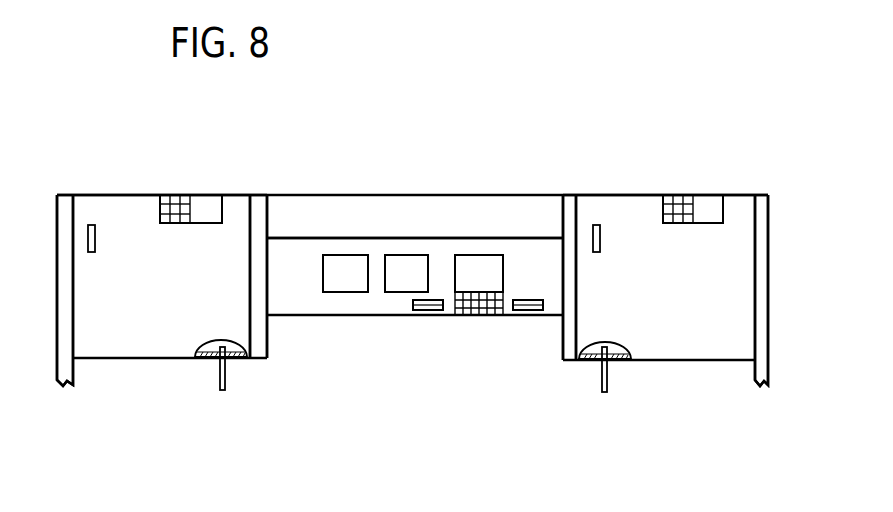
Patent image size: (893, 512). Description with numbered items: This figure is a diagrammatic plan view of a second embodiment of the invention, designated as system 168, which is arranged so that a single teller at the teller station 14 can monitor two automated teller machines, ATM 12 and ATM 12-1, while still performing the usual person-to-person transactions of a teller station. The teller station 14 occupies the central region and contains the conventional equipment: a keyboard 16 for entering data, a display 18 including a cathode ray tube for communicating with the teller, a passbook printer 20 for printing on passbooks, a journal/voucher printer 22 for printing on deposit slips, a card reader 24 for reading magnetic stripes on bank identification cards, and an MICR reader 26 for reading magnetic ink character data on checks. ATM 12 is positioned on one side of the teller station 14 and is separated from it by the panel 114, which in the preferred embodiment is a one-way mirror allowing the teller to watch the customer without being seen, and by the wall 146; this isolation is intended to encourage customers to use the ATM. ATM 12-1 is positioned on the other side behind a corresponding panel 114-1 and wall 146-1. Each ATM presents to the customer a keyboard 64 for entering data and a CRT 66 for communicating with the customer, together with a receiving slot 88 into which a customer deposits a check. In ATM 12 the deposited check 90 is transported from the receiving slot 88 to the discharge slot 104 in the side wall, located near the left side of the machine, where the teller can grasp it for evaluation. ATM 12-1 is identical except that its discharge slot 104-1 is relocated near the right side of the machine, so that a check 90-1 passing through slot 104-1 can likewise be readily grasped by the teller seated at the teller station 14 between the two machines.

The system 168 is at (464, 155).
The ATM 12-1 is at (93, 188).
The ATM 12 is at (730, 147).
The teller station 14 is at (419, 227).
The CRT 66 is at (210, 205).
The keyboard 64 is at (171, 221).
The receiving slot 88 is at (97, 243).
The panel 114-1 is at (262, 291).
The panel 114 is at (567, 216).
The discharge slot 104-1 is at (221, 352).
The discharge slot 104 is at (609, 352).
The check 90-1 is at (220, 379).
The check 90 is at (607, 383).
The wall 146-1 is at (72, 388).
The wall 146 is at (758, 375).
The passbook printer 20 is at (338, 280).
The journal/voucher printer 22 is at (395, 265).
The display 18 is at (480, 264).
The keyboard 16 is at (478, 307).
The MICR reader 26 is at (425, 312).
The card reader 24 is at (532, 312).